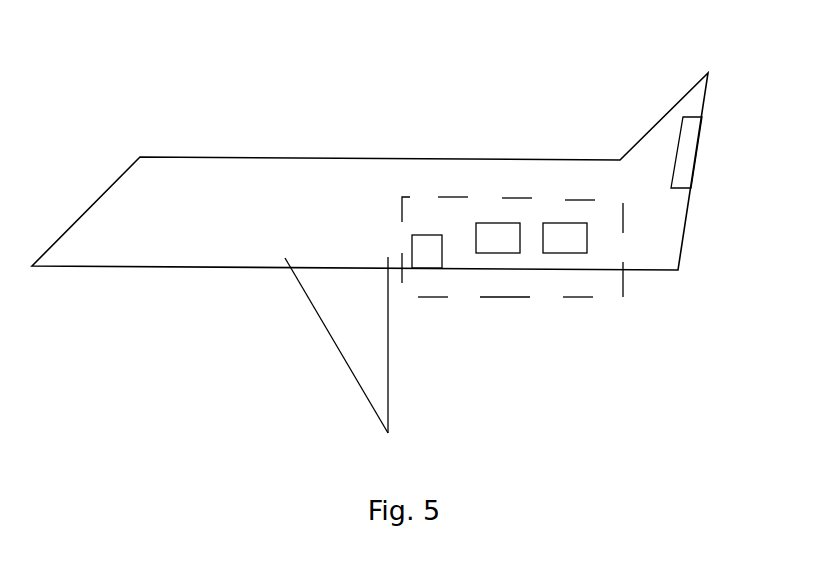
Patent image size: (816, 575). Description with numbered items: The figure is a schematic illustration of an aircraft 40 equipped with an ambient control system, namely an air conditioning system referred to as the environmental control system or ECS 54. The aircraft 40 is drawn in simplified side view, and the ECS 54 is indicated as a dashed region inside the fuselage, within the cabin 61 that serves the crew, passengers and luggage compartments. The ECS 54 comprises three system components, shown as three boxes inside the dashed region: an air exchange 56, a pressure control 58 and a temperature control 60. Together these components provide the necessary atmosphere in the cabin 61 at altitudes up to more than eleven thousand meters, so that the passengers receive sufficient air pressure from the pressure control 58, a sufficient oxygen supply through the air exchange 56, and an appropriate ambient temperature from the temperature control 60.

The aircraft 40 is at (116, 99).
The cabin 61 is at (349, 181).
The environmental control system (ECS) 54 is at (502, 177).
The air exchange 56 is at (432, 296).
The pressure control 58 is at (503, 283).
The temperature control 60 is at (572, 283).